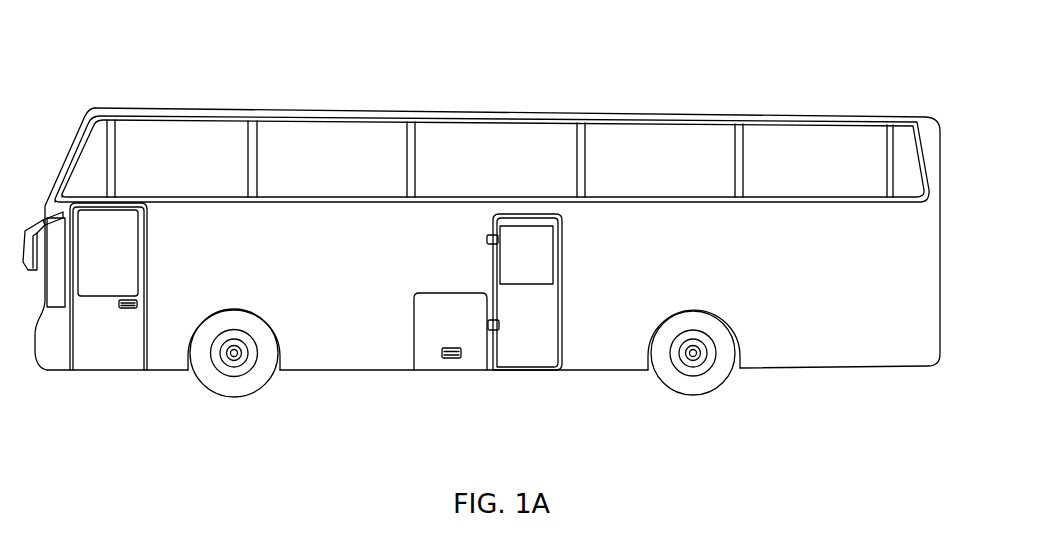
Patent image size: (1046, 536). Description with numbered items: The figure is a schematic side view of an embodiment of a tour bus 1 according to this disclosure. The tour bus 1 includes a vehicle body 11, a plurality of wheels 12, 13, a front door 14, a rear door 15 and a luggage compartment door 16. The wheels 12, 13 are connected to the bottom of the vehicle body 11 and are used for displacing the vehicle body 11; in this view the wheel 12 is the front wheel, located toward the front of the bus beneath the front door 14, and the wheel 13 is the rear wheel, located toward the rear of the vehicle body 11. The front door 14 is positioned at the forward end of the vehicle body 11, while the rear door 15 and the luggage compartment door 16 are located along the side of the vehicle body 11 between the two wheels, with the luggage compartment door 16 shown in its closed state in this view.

The tour bus 1 is at (100, 14).
The vehicle body 11 is at (176, 108).
The front wheel 12 is at (210, 377).
The rear wheel 13 is at (673, 377).
The front door 14 is at (107, 352).
The rear door 15 is at (525, 356).
The luggage compartment door 16 is at (432, 356).